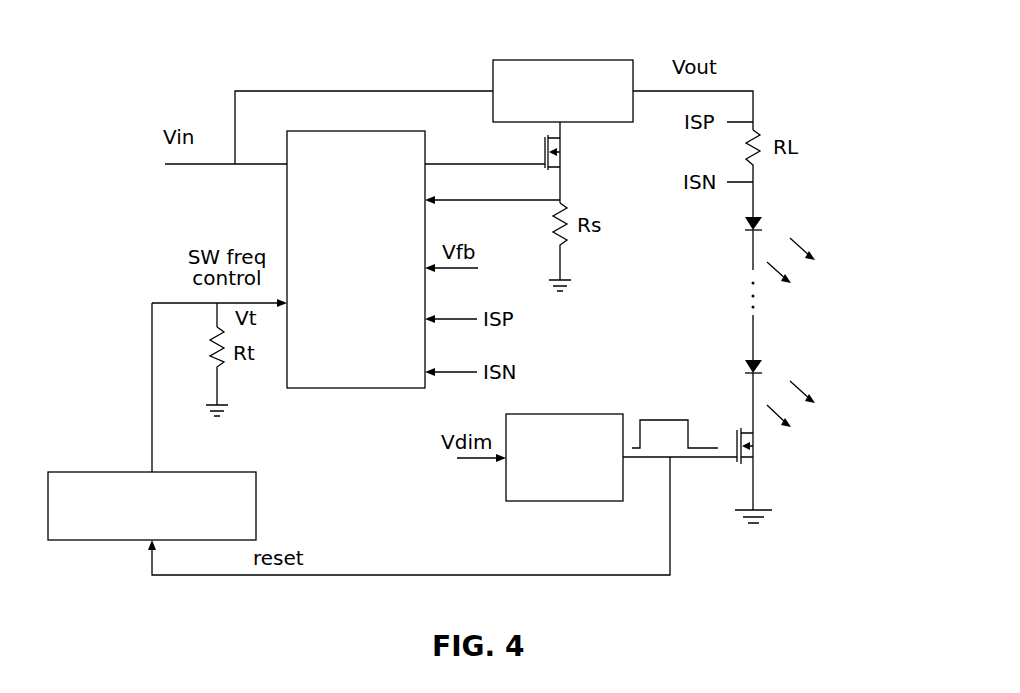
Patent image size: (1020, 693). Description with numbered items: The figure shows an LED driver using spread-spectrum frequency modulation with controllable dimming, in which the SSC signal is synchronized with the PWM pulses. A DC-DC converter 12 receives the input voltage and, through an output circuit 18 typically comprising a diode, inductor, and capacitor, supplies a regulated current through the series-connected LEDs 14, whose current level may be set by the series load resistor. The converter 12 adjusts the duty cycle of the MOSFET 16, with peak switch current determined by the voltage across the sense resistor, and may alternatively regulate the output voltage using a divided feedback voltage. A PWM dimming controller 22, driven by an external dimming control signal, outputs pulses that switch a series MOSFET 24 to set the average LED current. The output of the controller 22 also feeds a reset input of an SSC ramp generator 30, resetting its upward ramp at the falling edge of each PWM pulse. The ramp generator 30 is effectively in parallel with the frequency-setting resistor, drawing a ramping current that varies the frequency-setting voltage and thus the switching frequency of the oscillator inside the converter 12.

The DC-DC converter 12 is at (349, 373).
The LEDs 14 is at (715, 340).
The MOSFET 16 is at (562, 158).
The output circuit 18 is at (558, 60).
The PWM dimming controller 22 is at (575, 414).
The series MOSFET 24 is at (756, 448).
The SSC ramp generator 30 is at (256, 490).